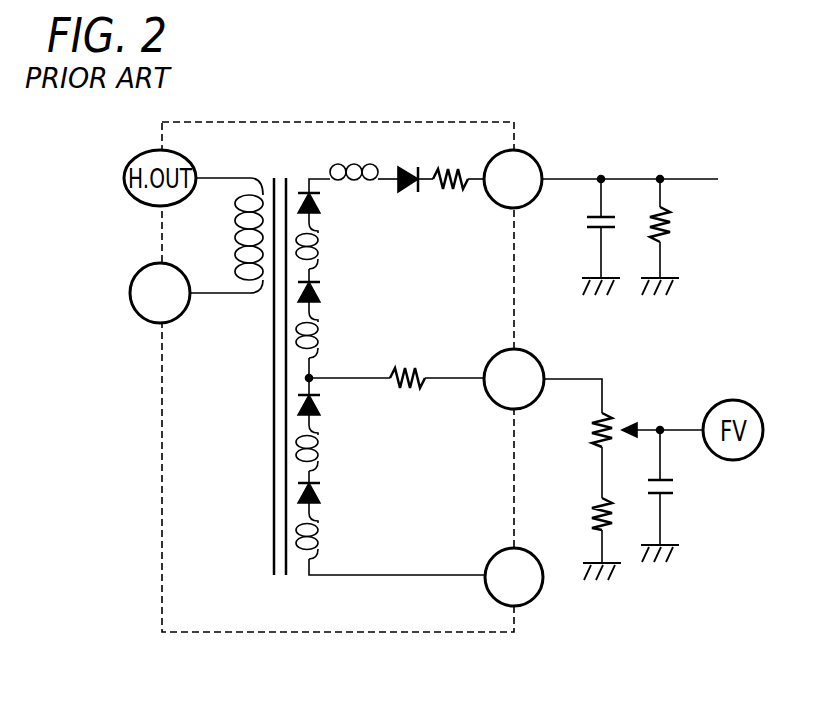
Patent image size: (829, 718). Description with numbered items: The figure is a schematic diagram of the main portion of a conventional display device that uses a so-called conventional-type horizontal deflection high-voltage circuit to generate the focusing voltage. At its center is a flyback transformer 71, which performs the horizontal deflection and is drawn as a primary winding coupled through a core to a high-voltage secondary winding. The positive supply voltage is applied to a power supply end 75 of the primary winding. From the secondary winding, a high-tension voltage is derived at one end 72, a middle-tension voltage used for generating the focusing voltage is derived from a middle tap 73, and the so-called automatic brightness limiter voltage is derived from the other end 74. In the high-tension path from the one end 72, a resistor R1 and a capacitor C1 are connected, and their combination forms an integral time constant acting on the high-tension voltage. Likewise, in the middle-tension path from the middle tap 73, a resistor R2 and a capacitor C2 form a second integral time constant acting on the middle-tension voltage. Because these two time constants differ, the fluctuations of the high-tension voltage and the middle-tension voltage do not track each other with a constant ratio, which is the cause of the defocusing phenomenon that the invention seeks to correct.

The flyback transformer 71 is at (245, 632).
The one end of high-voltage secondary winding 72 is at (538, 159).
The middle tap of high-voltage secondary winding 73 is at (542, 364).
The other end of secondary winding 74 is at (542, 587).
The power supply end of primary winding 75 is at (131, 306).
The resistor R1 is at (455, 168).
The resistor R2 is at (406, 365).
The capacitor C1 is at (587, 222).
The capacitor C2 is at (675, 485).